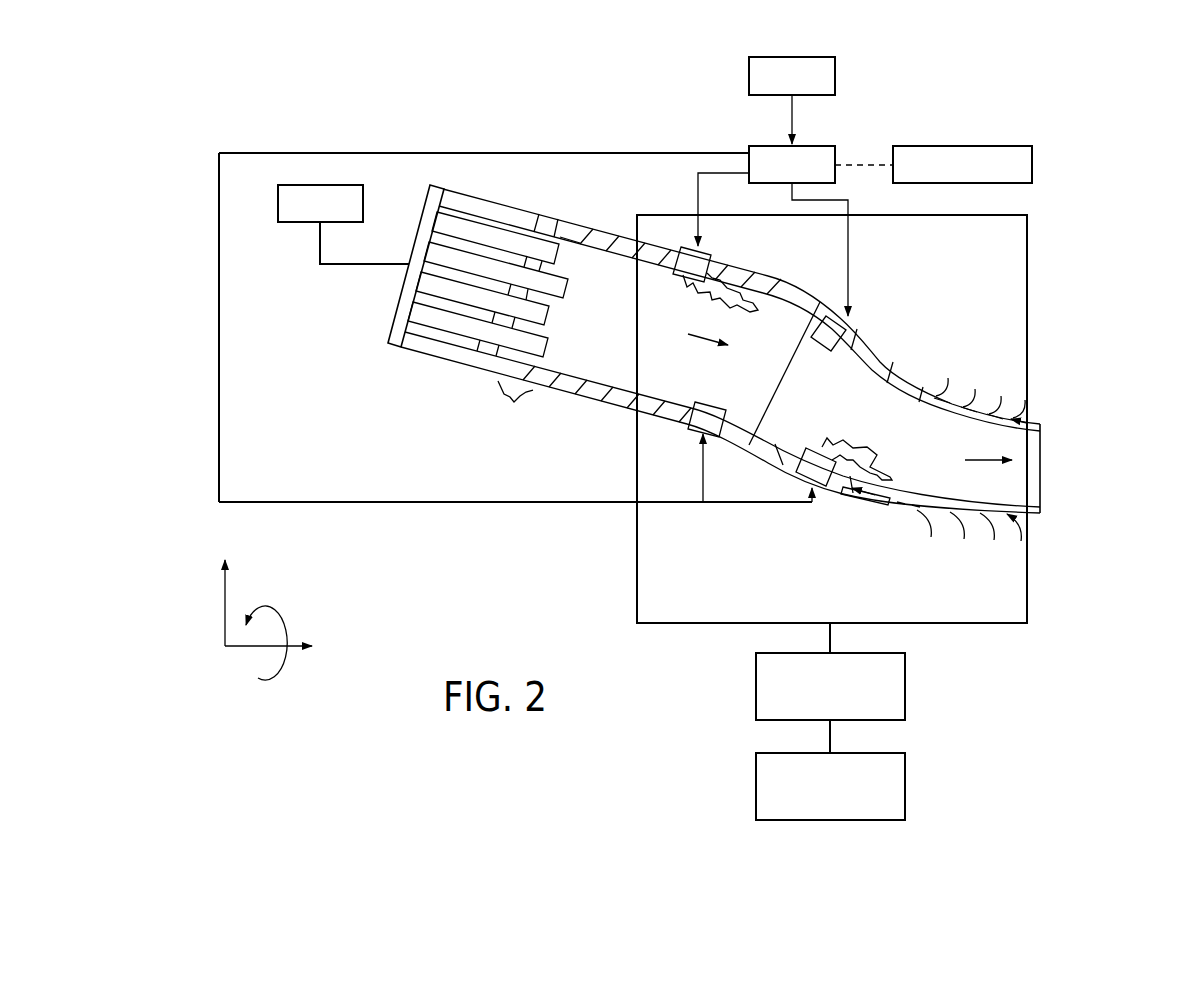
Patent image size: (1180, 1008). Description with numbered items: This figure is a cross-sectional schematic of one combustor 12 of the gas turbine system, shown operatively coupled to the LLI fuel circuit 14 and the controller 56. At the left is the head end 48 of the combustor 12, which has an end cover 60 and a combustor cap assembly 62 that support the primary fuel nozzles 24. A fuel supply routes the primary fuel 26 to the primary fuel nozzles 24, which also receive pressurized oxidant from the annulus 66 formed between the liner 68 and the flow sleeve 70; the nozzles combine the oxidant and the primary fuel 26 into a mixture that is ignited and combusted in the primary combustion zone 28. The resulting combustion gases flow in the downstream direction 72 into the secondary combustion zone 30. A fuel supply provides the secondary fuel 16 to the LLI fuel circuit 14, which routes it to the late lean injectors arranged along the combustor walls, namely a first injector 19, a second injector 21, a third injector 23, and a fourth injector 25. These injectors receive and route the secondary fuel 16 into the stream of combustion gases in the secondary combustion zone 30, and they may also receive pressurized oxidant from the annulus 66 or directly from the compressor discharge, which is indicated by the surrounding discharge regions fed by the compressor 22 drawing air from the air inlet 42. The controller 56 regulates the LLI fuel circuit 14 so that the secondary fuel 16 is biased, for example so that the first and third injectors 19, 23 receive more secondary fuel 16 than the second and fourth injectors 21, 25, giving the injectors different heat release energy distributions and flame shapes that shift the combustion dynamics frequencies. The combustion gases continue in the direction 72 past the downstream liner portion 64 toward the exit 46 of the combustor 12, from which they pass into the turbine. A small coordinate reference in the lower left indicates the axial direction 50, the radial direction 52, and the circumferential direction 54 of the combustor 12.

The combustor 12 is at (1104, 232).
The LLI fuel circuit 14 is at (813, 146).
The secondary fuel 16 is at (835, 77).
The first injector 19 is at (707, 262).
The second injector 21 is at (857, 328).
The turbine 22 is at (756, 686).
The third injector 23 is at (702, 425).
The primary fuel nozzles 24 is at (552, 345).
The fourth injector 25 is at (816, 443).
The primary fuel 26 is at (298, 222).
The primary combustion zone 28 is at (659, 362).
The secondary combustion zone 30 is at (881, 422).
The air inlet 42 is at (756, 786).
The exit 46 is at (1083, 441).
The head end 48 is at (362, 330).
The axial direction 50 is at (242, 650).
The radial direction 52 is at (222, 604).
The circumferential direction 54 is at (277, 611).
The controller 56 is at (963, 146).
The end cover 60 is at (397, 306).
The combustor cap assembly 62 is at (514, 403).
The downstream liner segment 64 is at (868, 497).
The annulus 66 is at (664, 249).
The liner 68 is at (603, 222).
The flow sleeve 70 is at (634, 229).
The direction 72 is at (702, 340).